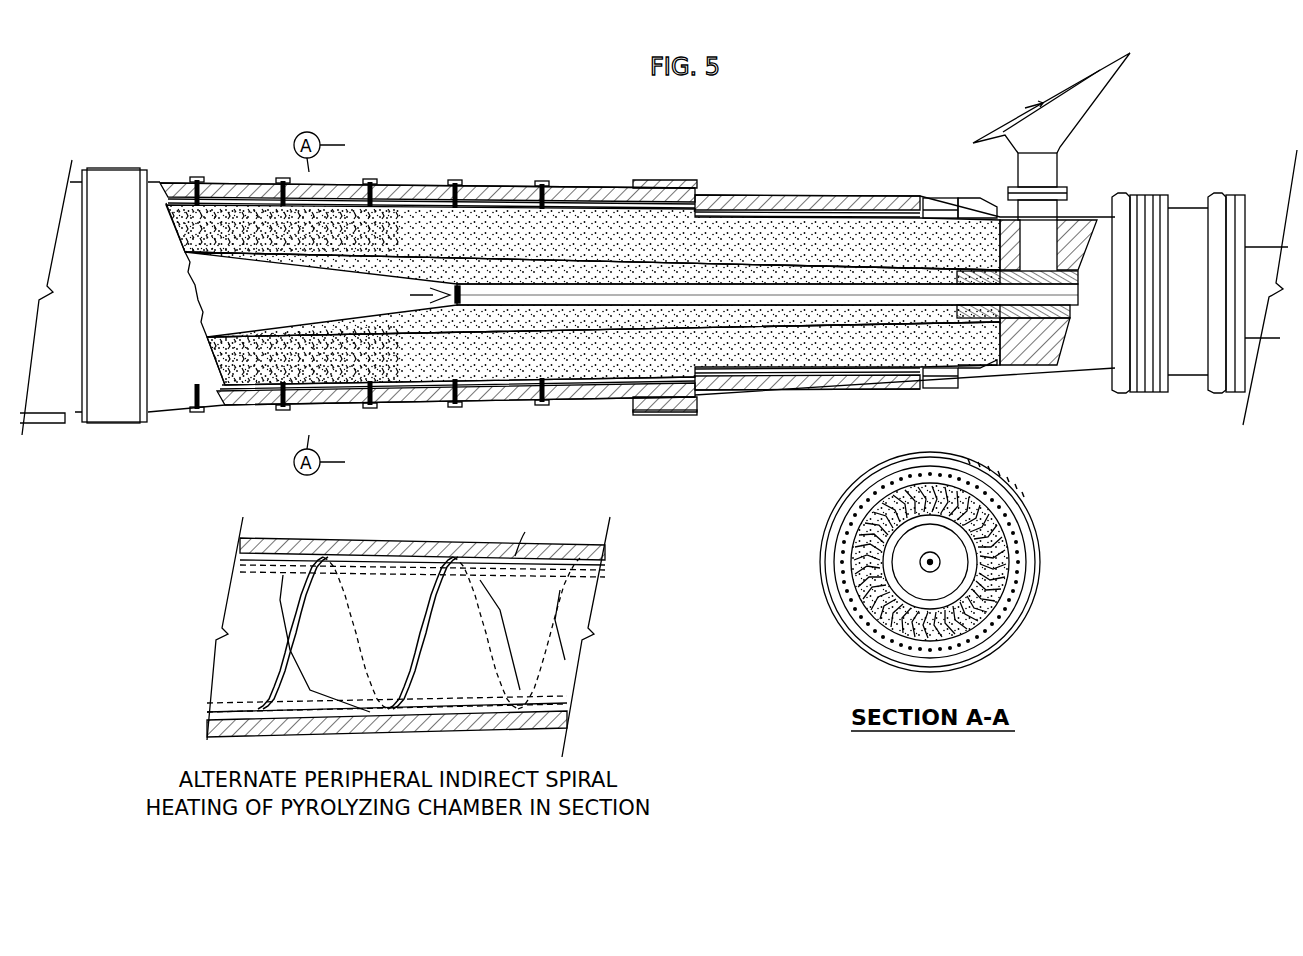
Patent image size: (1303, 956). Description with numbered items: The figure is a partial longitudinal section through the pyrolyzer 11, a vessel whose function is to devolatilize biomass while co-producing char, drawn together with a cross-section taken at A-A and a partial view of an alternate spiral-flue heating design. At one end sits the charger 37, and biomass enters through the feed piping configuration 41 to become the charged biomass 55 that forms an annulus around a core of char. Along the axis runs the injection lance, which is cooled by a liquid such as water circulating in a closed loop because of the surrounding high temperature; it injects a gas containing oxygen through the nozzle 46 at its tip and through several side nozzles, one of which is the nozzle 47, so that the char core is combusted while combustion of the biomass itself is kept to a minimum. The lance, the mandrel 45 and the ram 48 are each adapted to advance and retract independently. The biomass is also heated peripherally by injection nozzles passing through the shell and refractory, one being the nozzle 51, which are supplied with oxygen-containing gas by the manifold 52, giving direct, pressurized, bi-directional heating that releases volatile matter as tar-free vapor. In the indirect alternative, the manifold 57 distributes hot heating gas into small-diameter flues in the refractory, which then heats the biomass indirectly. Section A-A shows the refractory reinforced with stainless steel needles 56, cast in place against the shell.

The pyrolyzer 11 is at (557, 136).
The charger 37 is at (1203, 310).
The feed piping configuration 41 is at (1077, 117).
The mandrel 45 is at (977, 320).
The tip nozzle of lance 46 is at (448, 289).
The side injection nozzle of lance 47 is at (450, 312).
The ram 48 is at (1020, 375).
The peripheral injection nozzle 51 is at (360, 402).
The manifold 52 is at (368, 404).
The charged biomass 55 is at (830, 370).
The metallic needles 56 is at (995, 458).
The hot heating gas manifold 57 is at (673, 412).